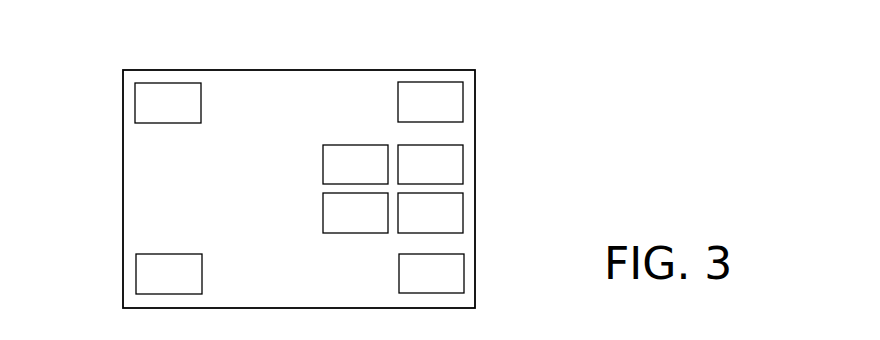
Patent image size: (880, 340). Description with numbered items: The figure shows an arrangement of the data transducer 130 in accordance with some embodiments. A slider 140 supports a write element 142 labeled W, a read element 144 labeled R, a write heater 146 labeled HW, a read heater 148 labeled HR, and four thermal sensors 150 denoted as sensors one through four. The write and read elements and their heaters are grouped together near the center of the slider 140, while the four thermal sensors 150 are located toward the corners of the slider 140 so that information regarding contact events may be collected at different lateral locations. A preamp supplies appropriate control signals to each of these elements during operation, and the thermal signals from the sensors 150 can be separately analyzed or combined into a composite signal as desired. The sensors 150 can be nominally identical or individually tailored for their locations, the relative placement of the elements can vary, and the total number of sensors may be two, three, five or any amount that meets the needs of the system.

The transducer 130 is at (620, 86).
The slider 140 is at (300, 70).
The write element 142 is at (463, 163).
The read element 144 is at (463, 211).
The write heater 146 is at (323, 162).
The read heater 148 is at (323, 211).
The thermal sensors 150 is at (135, 100).